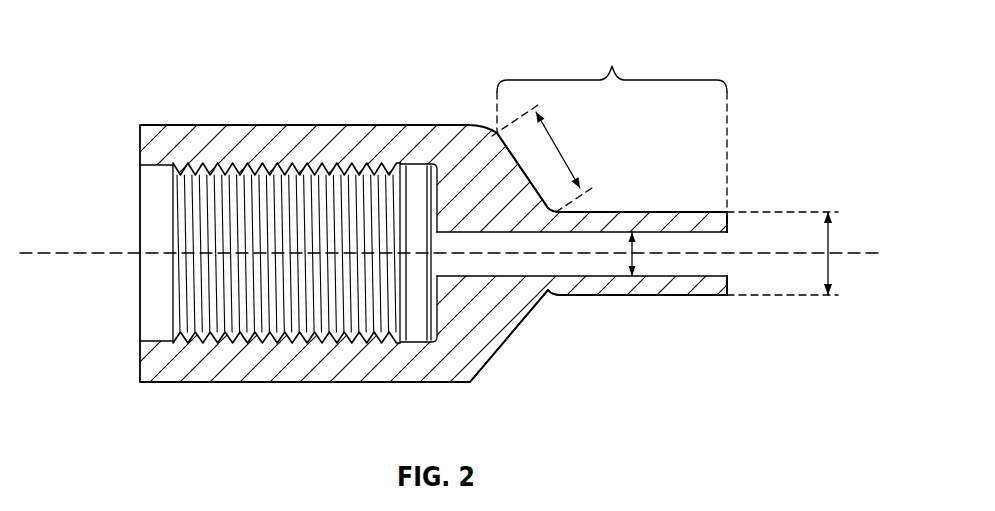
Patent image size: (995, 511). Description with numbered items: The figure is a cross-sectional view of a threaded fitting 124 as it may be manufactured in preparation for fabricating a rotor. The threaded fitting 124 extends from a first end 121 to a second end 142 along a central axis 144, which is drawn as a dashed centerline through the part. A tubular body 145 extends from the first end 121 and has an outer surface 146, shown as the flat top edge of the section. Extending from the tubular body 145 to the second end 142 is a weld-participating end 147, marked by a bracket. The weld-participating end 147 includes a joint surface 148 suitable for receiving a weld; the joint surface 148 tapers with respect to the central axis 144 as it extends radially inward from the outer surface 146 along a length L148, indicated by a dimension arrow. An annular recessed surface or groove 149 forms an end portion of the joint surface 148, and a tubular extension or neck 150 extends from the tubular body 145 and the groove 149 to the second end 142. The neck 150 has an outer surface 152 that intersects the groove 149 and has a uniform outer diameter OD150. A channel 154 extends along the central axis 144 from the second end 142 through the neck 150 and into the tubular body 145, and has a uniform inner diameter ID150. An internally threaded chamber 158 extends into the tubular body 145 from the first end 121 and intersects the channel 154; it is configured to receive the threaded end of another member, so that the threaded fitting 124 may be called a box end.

The first end 121 is at (138, 146).
The threaded fitting 124 is at (192, 140).
The tubular body 145 is at (343, 135).
The internally threaded chamber 158 is at (150, 307).
The outer surface 146 is at (389, 120).
The joint surface 148 is at (505, 362).
The groove 149 is at (551, 292).
The neck 150 is at (655, 213).
The outer surface of neck 152 is at (704, 205).
The second end 142 is at (730, 221).
The channel 154 is at (712, 261).
The central axis 144 is at (82, 252).
The weld-participating end 147 is at (612, 127).
The length of joint surface L148 is at (563, 152).
The outer diameter of neck OD150 is at (858, 207).
The inner diameter of channel ID150 is at (637, 260).